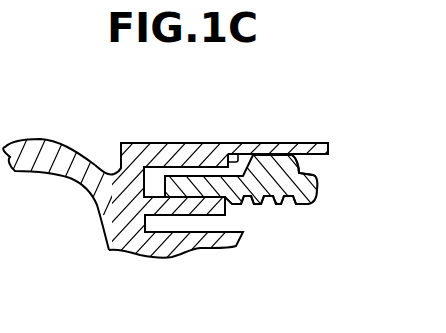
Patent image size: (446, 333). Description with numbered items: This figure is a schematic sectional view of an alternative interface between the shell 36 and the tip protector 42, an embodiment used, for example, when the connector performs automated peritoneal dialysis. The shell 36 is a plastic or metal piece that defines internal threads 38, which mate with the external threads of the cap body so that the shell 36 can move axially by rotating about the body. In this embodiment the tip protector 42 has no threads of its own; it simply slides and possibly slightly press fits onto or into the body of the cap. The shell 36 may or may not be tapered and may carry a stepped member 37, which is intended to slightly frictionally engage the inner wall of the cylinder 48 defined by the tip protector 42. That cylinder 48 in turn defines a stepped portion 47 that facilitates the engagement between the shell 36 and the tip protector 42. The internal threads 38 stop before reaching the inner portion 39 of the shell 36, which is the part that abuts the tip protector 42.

The shell 36 is at (252, 208).
The stepped member 37 is at (298, 160).
The internal threads 38 is at (280, 204).
The inner portion 39 is at (101, 219).
The tip protector 42 is at (58, 131).
The stepped portion 47 is at (237, 158).
The cylinder 48 is at (303, 143).